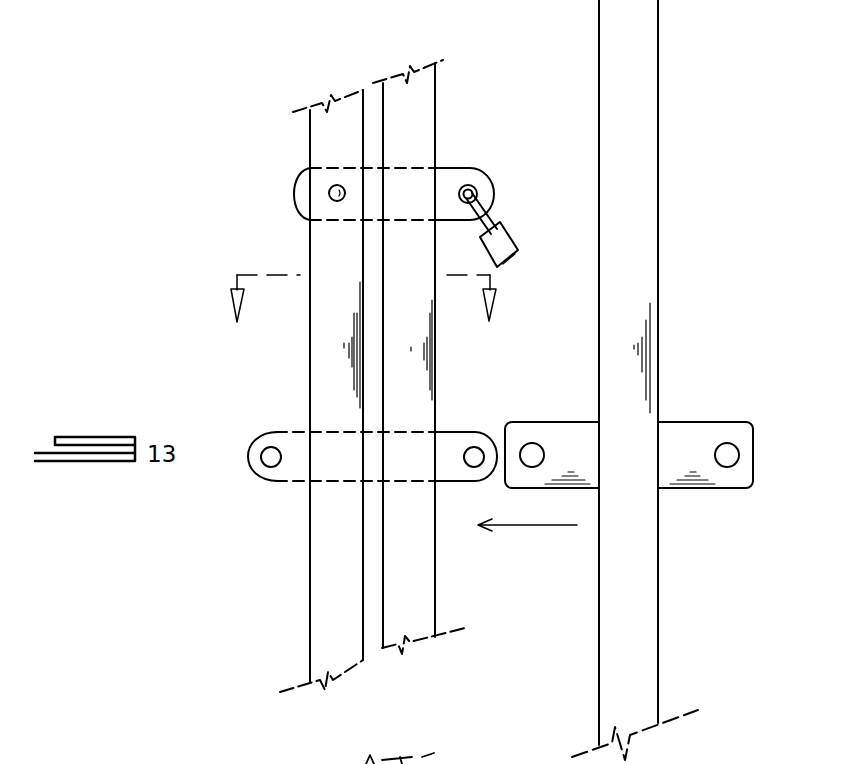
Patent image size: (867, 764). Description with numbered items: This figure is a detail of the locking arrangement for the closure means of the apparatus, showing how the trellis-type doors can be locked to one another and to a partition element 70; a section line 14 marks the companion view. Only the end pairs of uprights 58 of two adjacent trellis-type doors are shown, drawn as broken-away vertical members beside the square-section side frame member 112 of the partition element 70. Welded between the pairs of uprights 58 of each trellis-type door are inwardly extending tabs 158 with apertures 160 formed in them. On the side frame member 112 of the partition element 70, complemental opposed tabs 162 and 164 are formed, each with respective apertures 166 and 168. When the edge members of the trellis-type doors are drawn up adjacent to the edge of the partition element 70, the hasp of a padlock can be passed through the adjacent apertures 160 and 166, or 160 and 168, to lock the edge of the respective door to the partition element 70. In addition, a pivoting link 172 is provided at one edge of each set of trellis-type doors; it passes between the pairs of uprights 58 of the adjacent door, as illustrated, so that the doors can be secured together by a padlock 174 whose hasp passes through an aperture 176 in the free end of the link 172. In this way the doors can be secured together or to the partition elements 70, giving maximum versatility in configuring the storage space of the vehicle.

The section line 14- 14 is at (364, 317).
The uprights 58 is at (311, 641).
The partition element 70 is at (617, 380).
The side frame member 112 is at (645, 256).
The tabs 158 is at (272, 490).
The apertures 160 is at (268, 450).
The tab 162 is at (550, 428).
The tab 164 is at (712, 428).
The aperture 166 is at (532, 467).
The aperture 168 is at (728, 467).
The pivoting link 172 is at (452, 178).
The padlock 174 is at (495, 213).
The aperture 176 is at (487, 186).